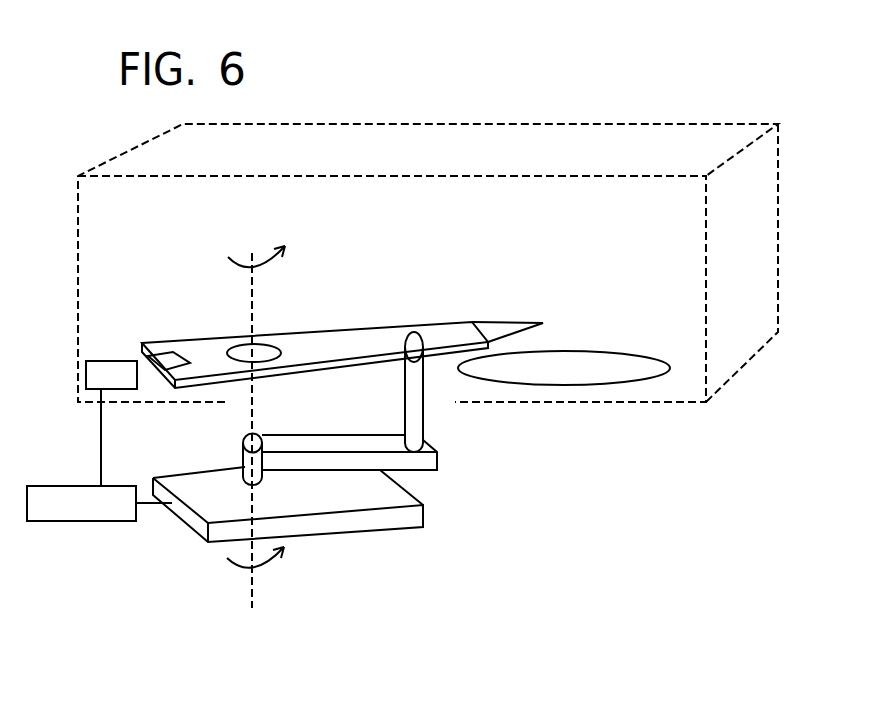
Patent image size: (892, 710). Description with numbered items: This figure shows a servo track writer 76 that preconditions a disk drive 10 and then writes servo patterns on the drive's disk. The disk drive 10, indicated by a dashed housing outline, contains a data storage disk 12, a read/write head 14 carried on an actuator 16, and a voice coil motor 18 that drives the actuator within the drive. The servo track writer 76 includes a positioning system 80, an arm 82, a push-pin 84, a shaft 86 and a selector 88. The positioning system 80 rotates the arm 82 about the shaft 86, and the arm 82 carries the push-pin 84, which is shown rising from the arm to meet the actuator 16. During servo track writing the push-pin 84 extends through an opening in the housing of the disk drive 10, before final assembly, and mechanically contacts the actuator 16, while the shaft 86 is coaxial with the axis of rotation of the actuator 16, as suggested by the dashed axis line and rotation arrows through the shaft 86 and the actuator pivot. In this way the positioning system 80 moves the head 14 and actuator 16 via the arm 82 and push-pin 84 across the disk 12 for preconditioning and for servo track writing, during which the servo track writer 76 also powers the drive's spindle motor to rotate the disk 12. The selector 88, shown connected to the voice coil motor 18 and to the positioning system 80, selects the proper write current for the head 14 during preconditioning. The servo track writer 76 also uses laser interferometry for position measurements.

The disk drive 10 is at (730, 397).
The data storage disk 12 is at (605, 350).
The read/write head 14 is at (543, 323).
The actuator 16 is at (310, 332).
The voice coil motor 18 is at (110, 361).
The servo track writer 76 is at (468, 505).
The positioning system 80 is at (350, 533).
The arm 82 is at (437, 469).
The push-pin 84 is at (423, 413).
The shaft 86 is at (243, 455).
The selector 88 is at (80, 521).